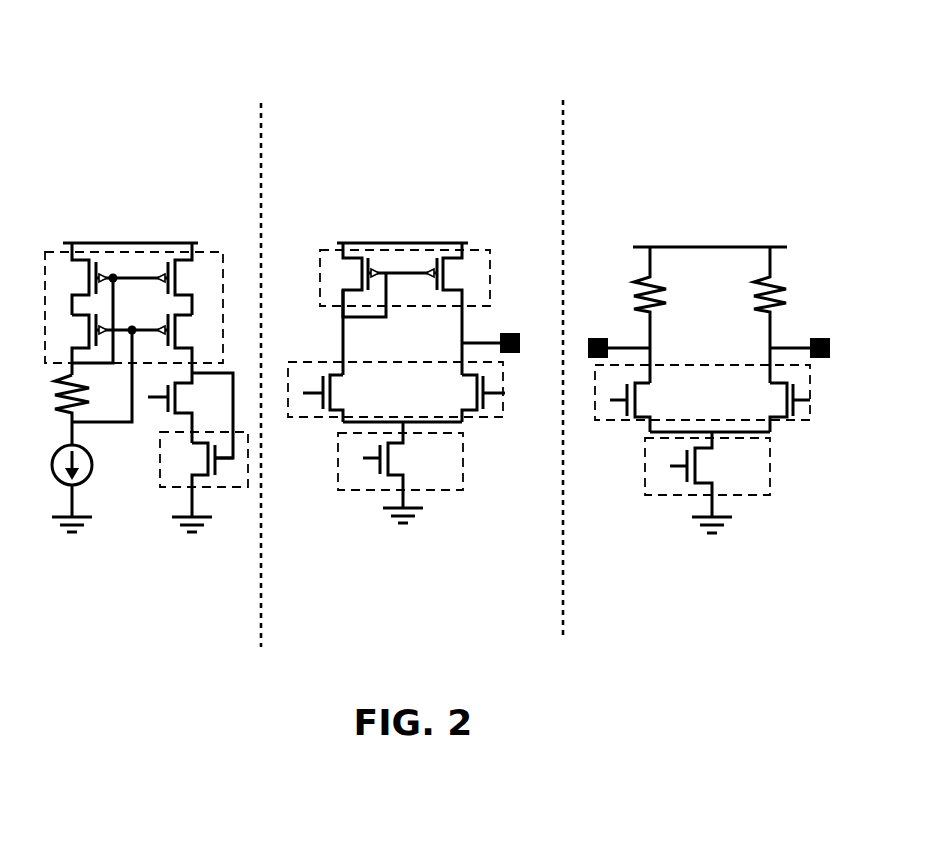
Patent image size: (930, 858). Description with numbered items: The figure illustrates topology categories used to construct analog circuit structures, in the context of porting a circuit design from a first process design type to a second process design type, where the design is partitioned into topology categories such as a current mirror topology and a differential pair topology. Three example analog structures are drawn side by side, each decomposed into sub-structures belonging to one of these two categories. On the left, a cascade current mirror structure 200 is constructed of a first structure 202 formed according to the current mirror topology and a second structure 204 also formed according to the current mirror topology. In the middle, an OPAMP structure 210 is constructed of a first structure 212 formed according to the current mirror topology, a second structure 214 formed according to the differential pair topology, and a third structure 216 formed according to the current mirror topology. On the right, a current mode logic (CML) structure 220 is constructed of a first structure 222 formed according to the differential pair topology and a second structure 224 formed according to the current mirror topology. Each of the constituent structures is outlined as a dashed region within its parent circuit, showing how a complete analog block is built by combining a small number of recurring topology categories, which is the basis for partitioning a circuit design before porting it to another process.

The cascade current mirror structure 200 is at (156, 76).
The first structure 202 is at (212, 250).
The second structure 204 is at (183, 489).
The OPAMP structure 210 is at (404, 81).
The first structure 212 is at (486, 250).
The second structure 214 is at (333, 361).
The third structure 216 is at (361, 490).
The current mode logic (CML) structure 220 is at (710, 81).
The first structure 222 is at (731, 365).
The second structure 224 is at (668, 495).